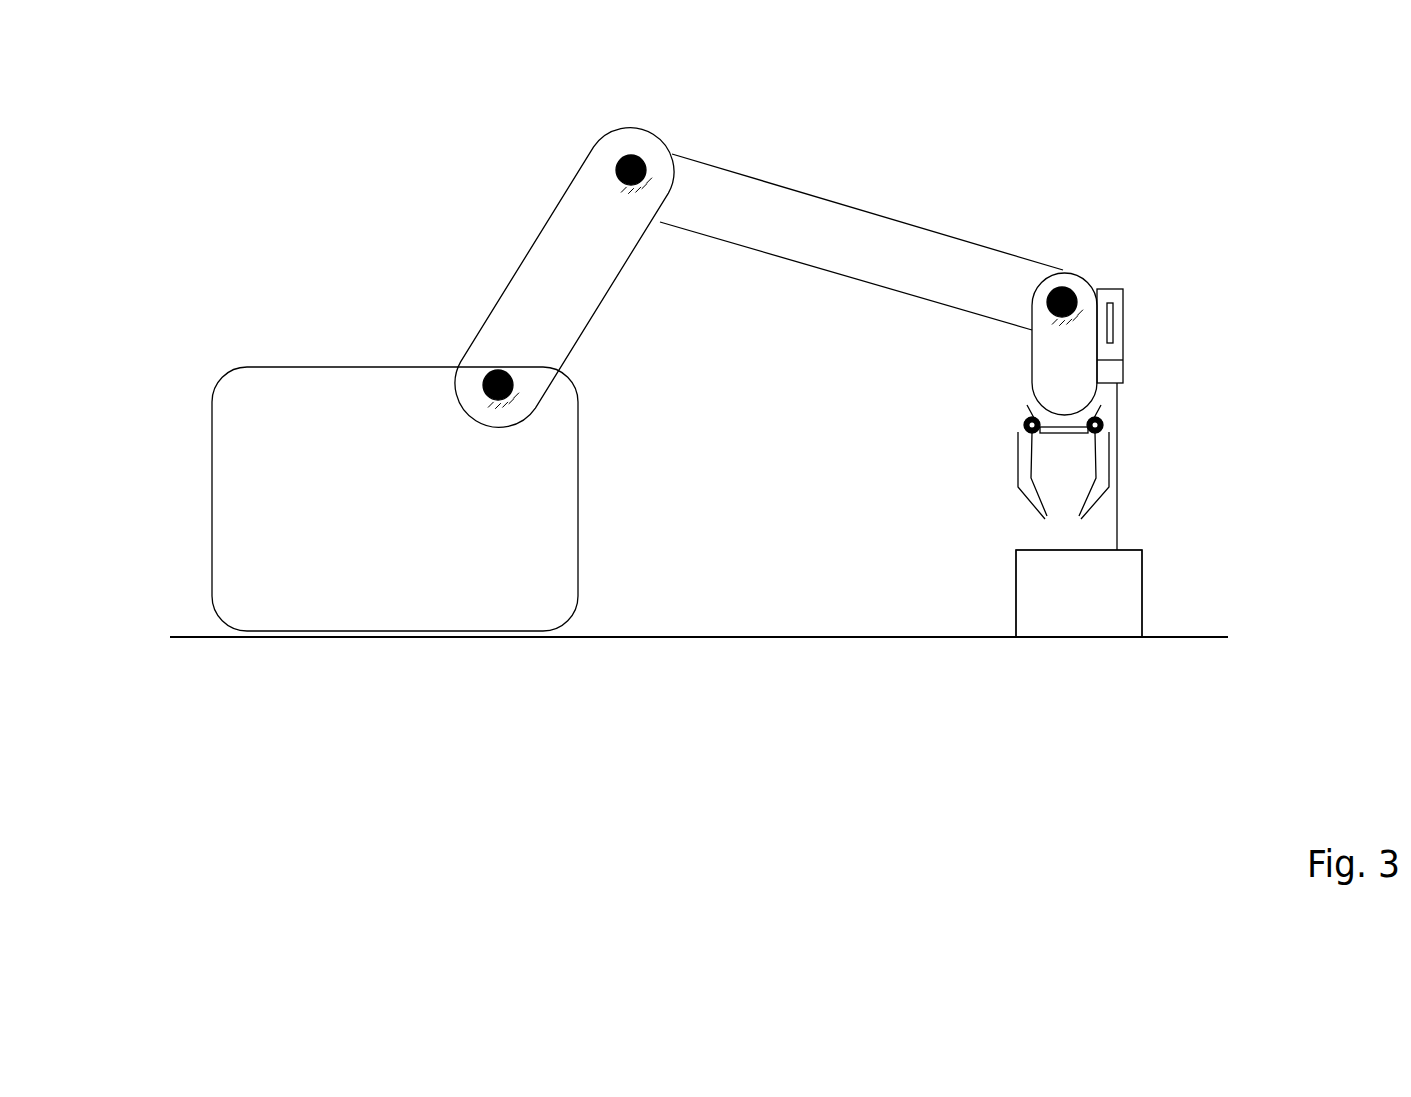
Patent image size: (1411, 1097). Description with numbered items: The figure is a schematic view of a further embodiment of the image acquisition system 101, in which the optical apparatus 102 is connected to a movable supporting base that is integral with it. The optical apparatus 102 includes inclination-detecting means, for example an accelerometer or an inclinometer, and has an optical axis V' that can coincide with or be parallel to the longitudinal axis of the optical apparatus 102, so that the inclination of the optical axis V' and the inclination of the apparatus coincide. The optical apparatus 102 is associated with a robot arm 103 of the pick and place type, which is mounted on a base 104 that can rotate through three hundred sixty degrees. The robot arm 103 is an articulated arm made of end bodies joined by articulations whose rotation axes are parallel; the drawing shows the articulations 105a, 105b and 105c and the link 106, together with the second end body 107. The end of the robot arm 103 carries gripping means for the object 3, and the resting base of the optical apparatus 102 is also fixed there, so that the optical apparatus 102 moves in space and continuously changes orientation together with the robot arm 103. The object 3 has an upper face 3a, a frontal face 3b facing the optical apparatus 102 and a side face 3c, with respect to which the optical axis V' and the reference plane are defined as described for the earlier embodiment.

The image acquisition system 101 is at (266, 172).
The optical apparatus 102 is at (1117, 305).
The robot arm 103 is at (435, 256).
The base 104 is at (352, 528).
The first joint 105a is at (492, 372).
The second joint 105b is at (638, 158).
The third joint 105c is at (1053, 290).
The first arm link 106 is at (538, 313).
The second end body 107 is at (860, 237).
The object 3 is at (989, 510).
The upper face 3a is at (1053, 550).
The frontal face 3b is at (1142, 592).
The side face 3c is at (1079, 593).
The optical axis V' is at (1184, 466).